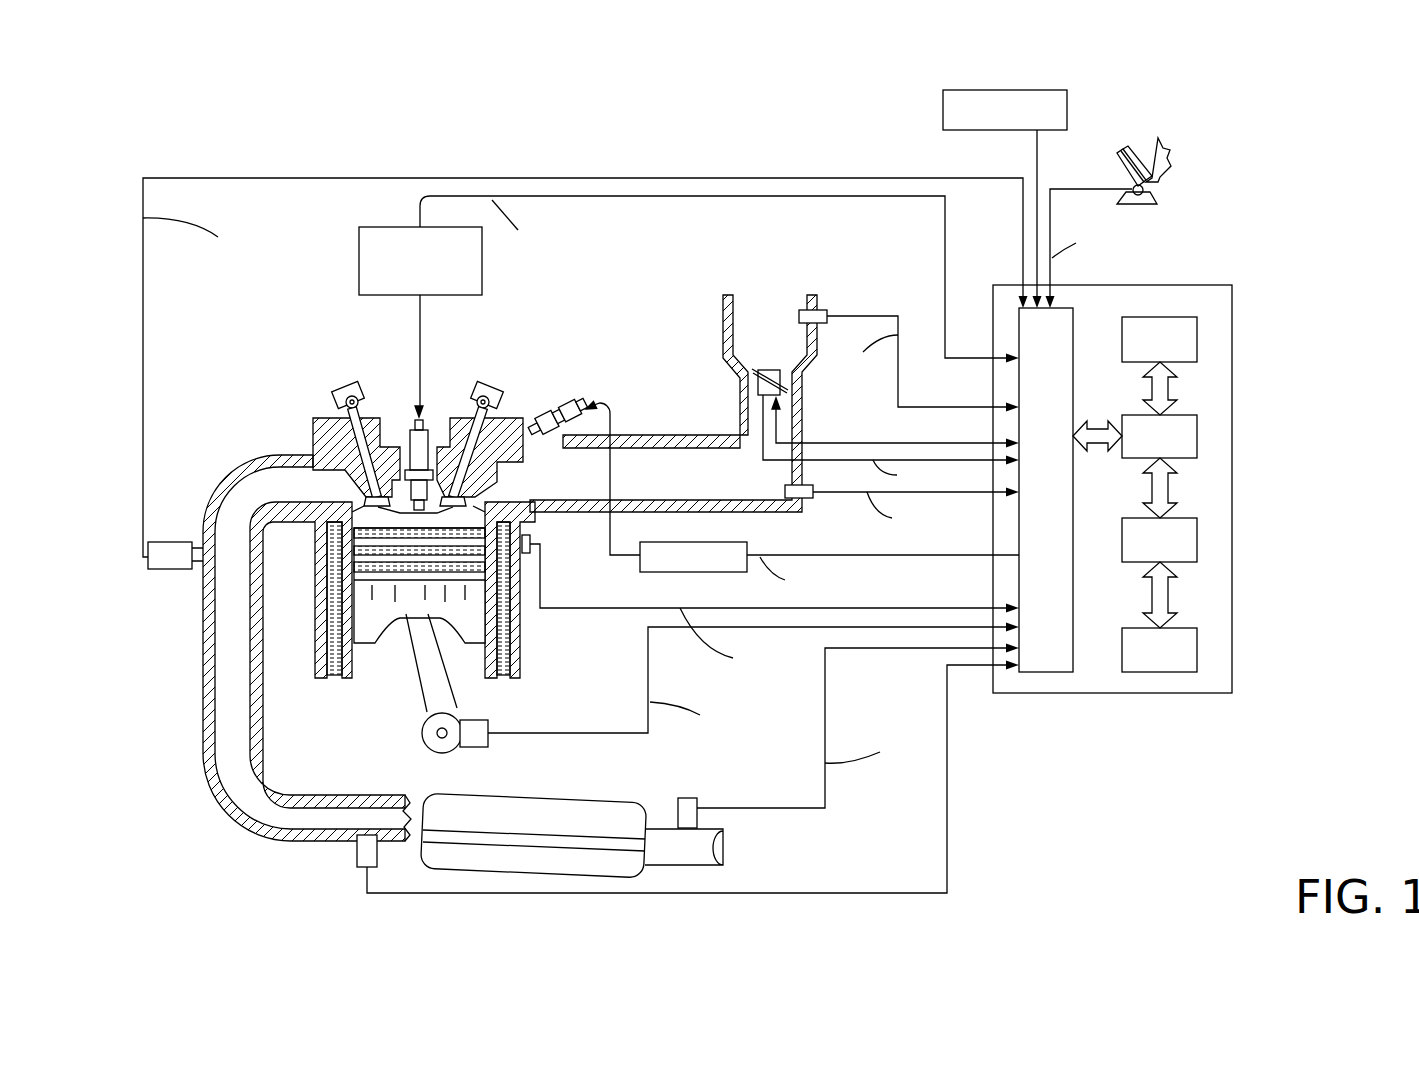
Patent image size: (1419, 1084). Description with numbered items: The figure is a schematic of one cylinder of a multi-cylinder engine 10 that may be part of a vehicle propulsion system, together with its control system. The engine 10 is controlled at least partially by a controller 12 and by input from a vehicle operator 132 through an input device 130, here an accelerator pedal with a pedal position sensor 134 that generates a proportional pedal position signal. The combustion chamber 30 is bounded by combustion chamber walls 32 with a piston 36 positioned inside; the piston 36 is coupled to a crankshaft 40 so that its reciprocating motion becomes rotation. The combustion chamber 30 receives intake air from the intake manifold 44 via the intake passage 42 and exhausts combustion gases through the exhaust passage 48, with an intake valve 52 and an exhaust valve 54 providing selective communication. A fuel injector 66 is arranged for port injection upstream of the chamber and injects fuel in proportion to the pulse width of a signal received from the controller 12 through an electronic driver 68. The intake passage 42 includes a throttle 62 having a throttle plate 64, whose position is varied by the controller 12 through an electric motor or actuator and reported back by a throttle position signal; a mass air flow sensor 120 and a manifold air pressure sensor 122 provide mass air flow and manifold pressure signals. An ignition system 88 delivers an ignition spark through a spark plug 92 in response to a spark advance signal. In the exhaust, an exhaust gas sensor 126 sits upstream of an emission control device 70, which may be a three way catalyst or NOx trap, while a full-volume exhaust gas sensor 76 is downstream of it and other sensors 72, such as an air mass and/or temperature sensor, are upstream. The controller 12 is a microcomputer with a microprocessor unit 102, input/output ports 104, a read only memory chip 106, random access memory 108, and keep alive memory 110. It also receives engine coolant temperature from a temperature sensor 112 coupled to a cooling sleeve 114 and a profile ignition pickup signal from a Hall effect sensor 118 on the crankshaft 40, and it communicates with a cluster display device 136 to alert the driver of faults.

The engine 10 is at (248, 373).
The controller 12 is at (1232, 285).
The combustion chamber 30 is at (417, 522).
The combustion chamber walls 32 is at (360, 665).
The piston 36 is at (422, 622).
The crankshaft 40 is at (430, 755).
The intake passage 42 is at (784, 342).
The intake manifold 44 is at (716, 485).
The exhaust passage 48 is at (294, 495).
The intake valve 52 is at (462, 494).
The exhaust valve 54 is at (367, 492).
The throttle 62 is at (788, 377).
The throttle plate 64 is at (745, 378).
The fuel injector 66 is at (562, 417).
The electronic driver 68 is at (667, 572).
The emission control device 70 is at (603, 803).
The sensors 72 is at (353, 853).
The full-volume exhaust gas sensor 76 is at (690, 797).
The ignition system 88 is at (370, 227).
The spark plug 92 is at (427, 430).
The microprocessor unit 102 is at (1197, 433).
The input/output ports 104 is at (1075, 317).
The read only memory chip 106 is at (1197, 335).
The random access memory 108 is at (1197, 538).
The keep alive memory 110 is at (1197, 648).
The temperature sensor 112 is at (535, 553).
The cooling sleeve 114 is at (500, 630).
The Hall effect sensor 118 is at (478, 747).
The mass air flow sensor 120 is at (822, 305).
The manifold air pressure sensor 122 is at (805, 505).
The exhaust gas sensor 126 is at (148, 545).
The input device 130 is at (1117, 168).
The vehicle operator 132 is at (1168, 152).
The pedal position sensor 134 is at (1158, 192).
The cluster display device 136 is at (945, 120).